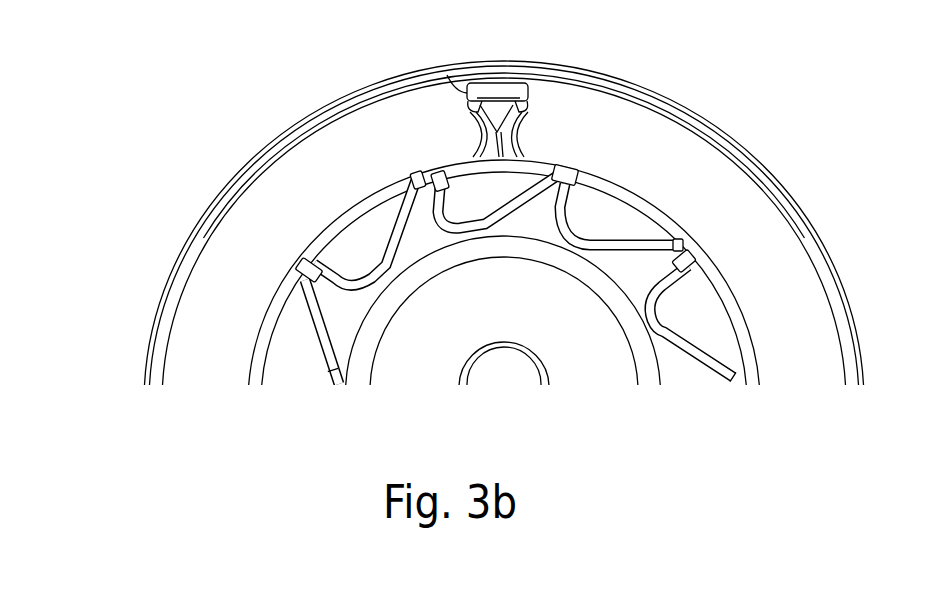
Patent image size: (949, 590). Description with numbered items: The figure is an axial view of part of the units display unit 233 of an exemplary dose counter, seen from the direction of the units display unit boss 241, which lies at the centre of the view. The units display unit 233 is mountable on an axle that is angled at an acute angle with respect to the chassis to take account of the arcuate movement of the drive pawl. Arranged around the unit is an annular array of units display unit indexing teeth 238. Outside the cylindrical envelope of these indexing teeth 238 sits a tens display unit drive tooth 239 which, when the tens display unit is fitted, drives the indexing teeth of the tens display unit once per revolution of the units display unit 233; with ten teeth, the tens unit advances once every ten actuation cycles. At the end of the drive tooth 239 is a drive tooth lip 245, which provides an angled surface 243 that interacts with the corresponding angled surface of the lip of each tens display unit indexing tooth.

The units display unit 233 is at (490, 298).
The units display unit indexing teeth 238 is at (325, 287).
The tens display unit drive tooth 239 is at (523, 110).
The units display unit boss 241 is at (507, 373).
The angled surface 243 is at (478, 107).
The drive tooth lip 245 is at (490, 63).